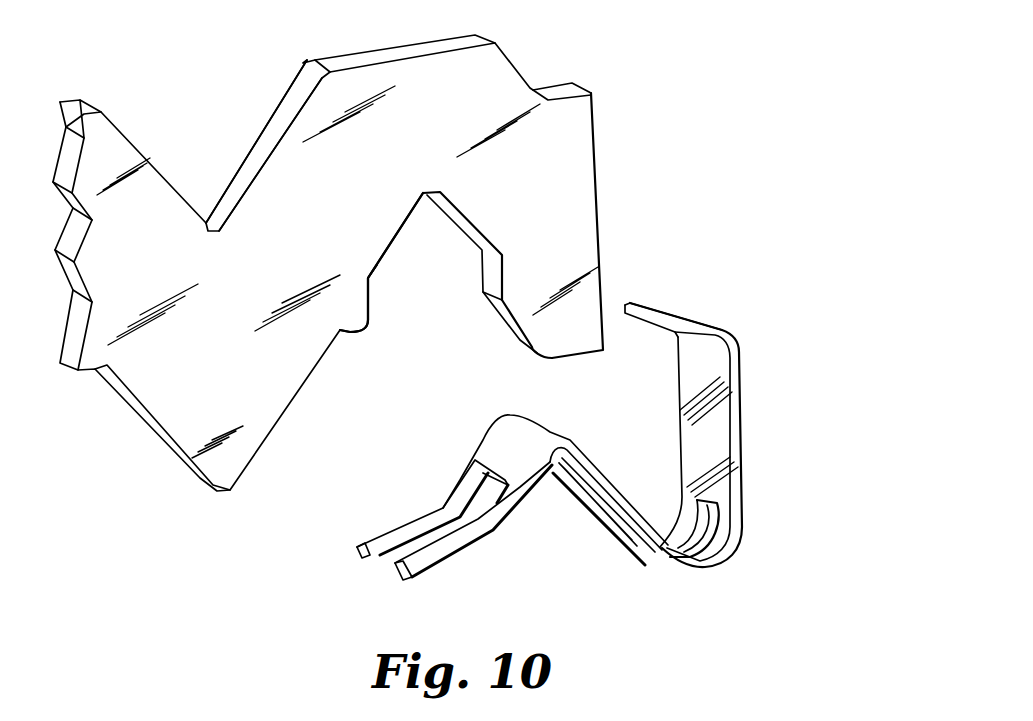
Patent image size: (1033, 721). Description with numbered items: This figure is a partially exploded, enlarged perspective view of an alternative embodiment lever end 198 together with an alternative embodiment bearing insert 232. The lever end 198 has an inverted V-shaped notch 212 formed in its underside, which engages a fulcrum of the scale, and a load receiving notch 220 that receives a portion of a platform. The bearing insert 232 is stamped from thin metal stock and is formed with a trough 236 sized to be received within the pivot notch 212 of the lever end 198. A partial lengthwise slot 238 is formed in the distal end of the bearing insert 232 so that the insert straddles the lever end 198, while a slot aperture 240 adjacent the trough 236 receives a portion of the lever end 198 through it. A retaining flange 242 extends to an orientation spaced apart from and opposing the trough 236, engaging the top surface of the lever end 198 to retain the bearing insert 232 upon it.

The lever end 198 is at (373, 252).
The load receiving notch 220 is at (246, 145).
The inverted V-shaped notch 212 is at (381, 318).
The bearing insert 232 is at (740, 397).
The retaining flange 242 is at (681, 282).
The trough 236 is at (539, 538).
The partial lengthwise slot 238 is at (418, 550).
The slot aperture 240 is at (711, 580).